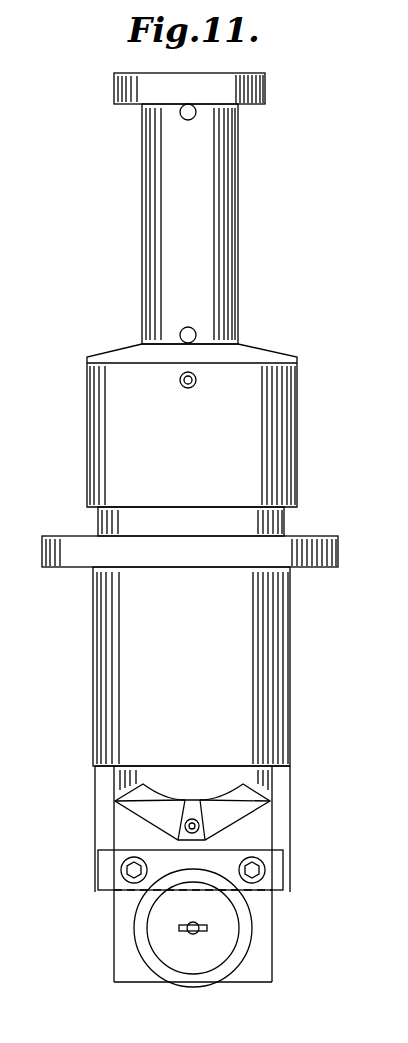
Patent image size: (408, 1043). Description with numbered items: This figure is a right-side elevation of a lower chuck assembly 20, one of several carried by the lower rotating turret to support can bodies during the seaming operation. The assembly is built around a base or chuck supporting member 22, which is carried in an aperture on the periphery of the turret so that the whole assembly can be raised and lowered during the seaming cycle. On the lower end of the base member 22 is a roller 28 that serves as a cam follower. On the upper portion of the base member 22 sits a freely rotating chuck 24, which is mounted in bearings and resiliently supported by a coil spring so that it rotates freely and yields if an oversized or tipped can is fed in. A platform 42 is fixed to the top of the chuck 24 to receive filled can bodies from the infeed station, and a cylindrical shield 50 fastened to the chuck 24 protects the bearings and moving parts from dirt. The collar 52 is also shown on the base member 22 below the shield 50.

The lower chuck assembly 20 is at (82, 496).
The base or chuck supporting member 22 is at (92, 623).
The freely rotating chuck 24 is at (150, 212).
The roller 28 is at (178, 986).
The platform 42 is at (266, 84).
The cylindrical shield 50 is at (86, 412).
The collar 52 is at (84, 538).